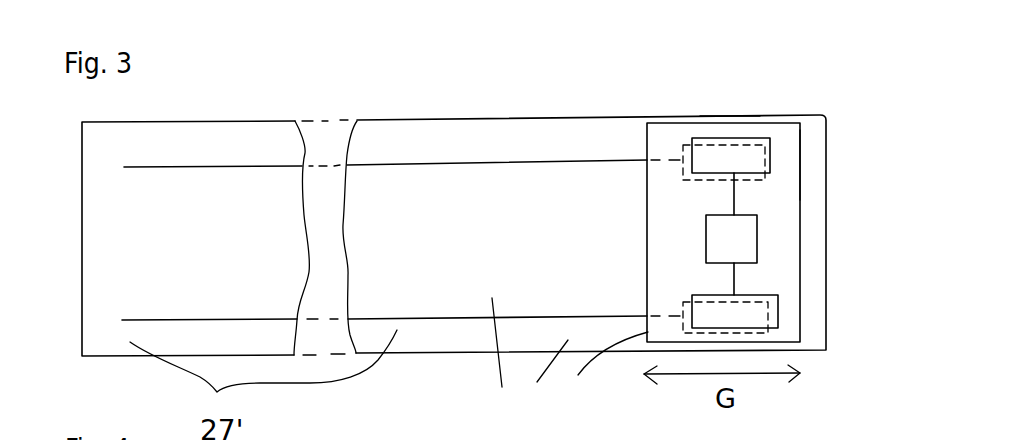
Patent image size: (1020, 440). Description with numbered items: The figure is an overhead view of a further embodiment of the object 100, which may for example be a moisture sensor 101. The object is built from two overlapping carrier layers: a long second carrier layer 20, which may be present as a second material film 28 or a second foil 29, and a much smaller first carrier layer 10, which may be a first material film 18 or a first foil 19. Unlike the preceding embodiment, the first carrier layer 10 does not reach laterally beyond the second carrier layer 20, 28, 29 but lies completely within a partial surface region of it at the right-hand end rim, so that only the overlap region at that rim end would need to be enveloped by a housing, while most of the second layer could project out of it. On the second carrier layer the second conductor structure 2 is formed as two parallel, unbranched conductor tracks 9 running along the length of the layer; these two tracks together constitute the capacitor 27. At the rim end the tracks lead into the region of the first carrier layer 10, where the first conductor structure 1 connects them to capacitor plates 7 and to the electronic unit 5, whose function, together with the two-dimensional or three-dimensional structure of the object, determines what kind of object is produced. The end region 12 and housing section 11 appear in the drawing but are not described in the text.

The object 100 is at (454, 193).
The moisture sensor 101 is at (330, 75).
The second conductor structure 2 is at (401, 240).
The conductor tracks 9 is at (170, 169).
The first carrier layer 10 is at (670, 205).
The first material film 18 is at (670, 205).
The first foil 19 is at (665, 137).
The end region 12 is at (717, 116).
The second carrier layer 20 is at (564, 367).
The housing section 11 is at (782, 137).
The capacitor plates 7 is at (798, 235).
The capacitor 27 is at (753, 164).
The electronic unit 5 is at (745, 243).
The first conductor structure 1 is at (728, 280).
The second material film 28 is at (564, 367).
The second foil 29 is at (564, 367).